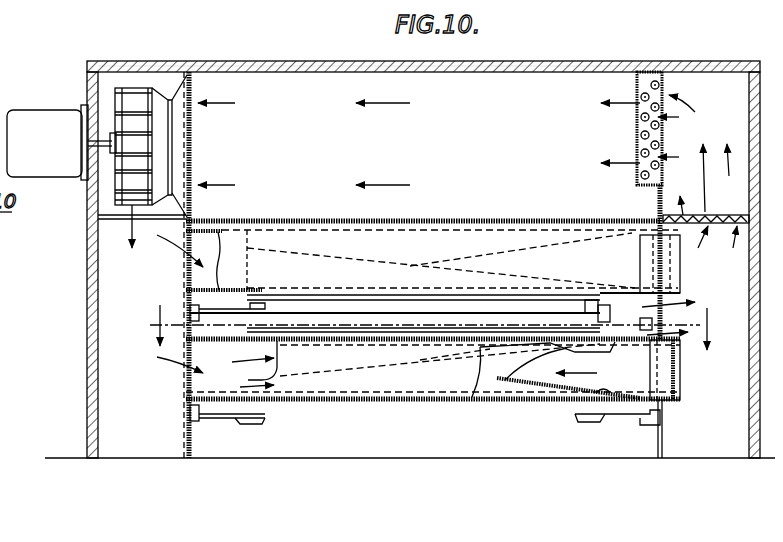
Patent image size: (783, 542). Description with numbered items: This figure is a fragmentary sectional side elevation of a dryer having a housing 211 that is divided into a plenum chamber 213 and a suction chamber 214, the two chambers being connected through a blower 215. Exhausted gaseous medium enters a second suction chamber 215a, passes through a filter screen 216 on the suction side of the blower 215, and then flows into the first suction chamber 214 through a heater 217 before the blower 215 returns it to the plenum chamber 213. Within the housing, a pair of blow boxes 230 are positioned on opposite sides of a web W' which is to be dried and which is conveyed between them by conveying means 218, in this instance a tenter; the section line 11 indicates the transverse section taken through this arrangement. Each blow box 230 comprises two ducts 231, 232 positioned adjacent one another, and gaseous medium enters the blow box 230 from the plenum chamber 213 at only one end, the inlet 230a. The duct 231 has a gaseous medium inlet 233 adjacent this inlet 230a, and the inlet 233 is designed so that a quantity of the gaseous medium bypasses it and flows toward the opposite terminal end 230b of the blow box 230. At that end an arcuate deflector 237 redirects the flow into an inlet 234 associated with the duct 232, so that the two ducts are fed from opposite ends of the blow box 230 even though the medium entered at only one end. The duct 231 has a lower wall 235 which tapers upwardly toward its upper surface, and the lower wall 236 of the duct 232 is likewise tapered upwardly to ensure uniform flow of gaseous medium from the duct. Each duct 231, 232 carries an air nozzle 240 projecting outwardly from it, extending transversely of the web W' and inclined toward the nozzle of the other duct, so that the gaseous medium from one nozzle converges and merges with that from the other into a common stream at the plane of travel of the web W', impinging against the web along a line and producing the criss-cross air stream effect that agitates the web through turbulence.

The housing 211 is at (690, 44).
The plenum chamber 213 is at (100, 330).
The suction chamber 214 is at (552, 55).
The blower 215 is at (139, 88).
The second suction chamber 215a is at (678, 443).
The filter screen 216 is at (708, 221).
The heater 217 is at (637, 138).
The conveying means 218 is at (250, 306).
The blow box 230 is at (471, 221).
The inlet of blow box 230a is at (186, 287).
The opposite terminal end of blow box 230b is at (745, 271).
The duct 231 is at (392, 256).
The duct 232 is at (602, 216).
The gaseous medium inlet 233 is at (244, 246).
The inlet 234 is at (607, 393).
The lower wall 235 is at (440, 363).
The lower wall 236 is at (512, 377).
The arcuate deflector 237 is at (681, 284).
The air nozzle 240 is at (304, 295).
The section line 11 is at (442, 321).
The web W' is at (395, 339).